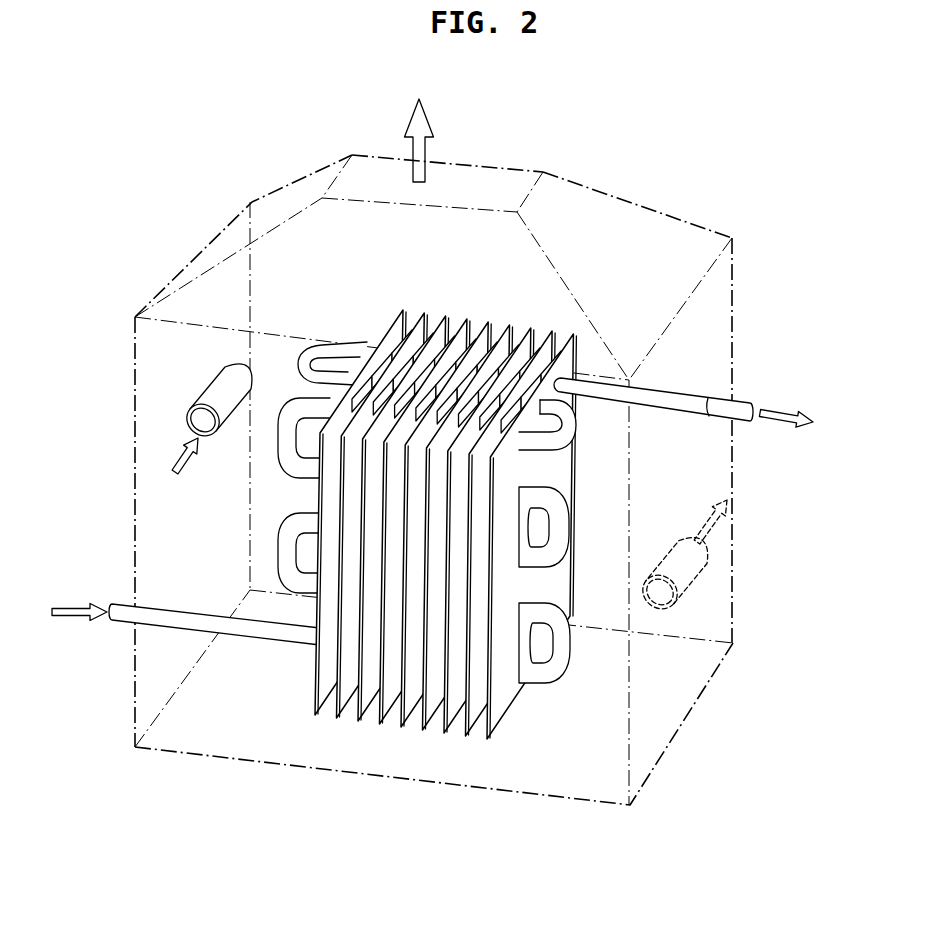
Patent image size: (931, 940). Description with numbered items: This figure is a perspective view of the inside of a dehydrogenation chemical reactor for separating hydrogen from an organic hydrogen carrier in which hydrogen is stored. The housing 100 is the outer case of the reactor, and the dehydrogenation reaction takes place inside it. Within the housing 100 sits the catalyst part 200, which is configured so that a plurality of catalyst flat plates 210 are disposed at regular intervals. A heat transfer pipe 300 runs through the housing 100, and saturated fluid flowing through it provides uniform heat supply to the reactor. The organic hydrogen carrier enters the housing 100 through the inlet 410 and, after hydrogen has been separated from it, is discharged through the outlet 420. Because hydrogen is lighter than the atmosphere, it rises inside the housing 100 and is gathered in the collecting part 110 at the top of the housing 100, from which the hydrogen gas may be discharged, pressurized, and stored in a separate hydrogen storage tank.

The housing 100 is at (646, 201).
The collecting part 110 is at (480, 177).
The catalyst part 200 is at (545, 588).
The catalyst flat plates 210 is at (420, 730).
The heat transfer pipe 300 is at (183, 642).
The inlet 410 is at (207, 392).
The outlet 420 is at (690, 555).